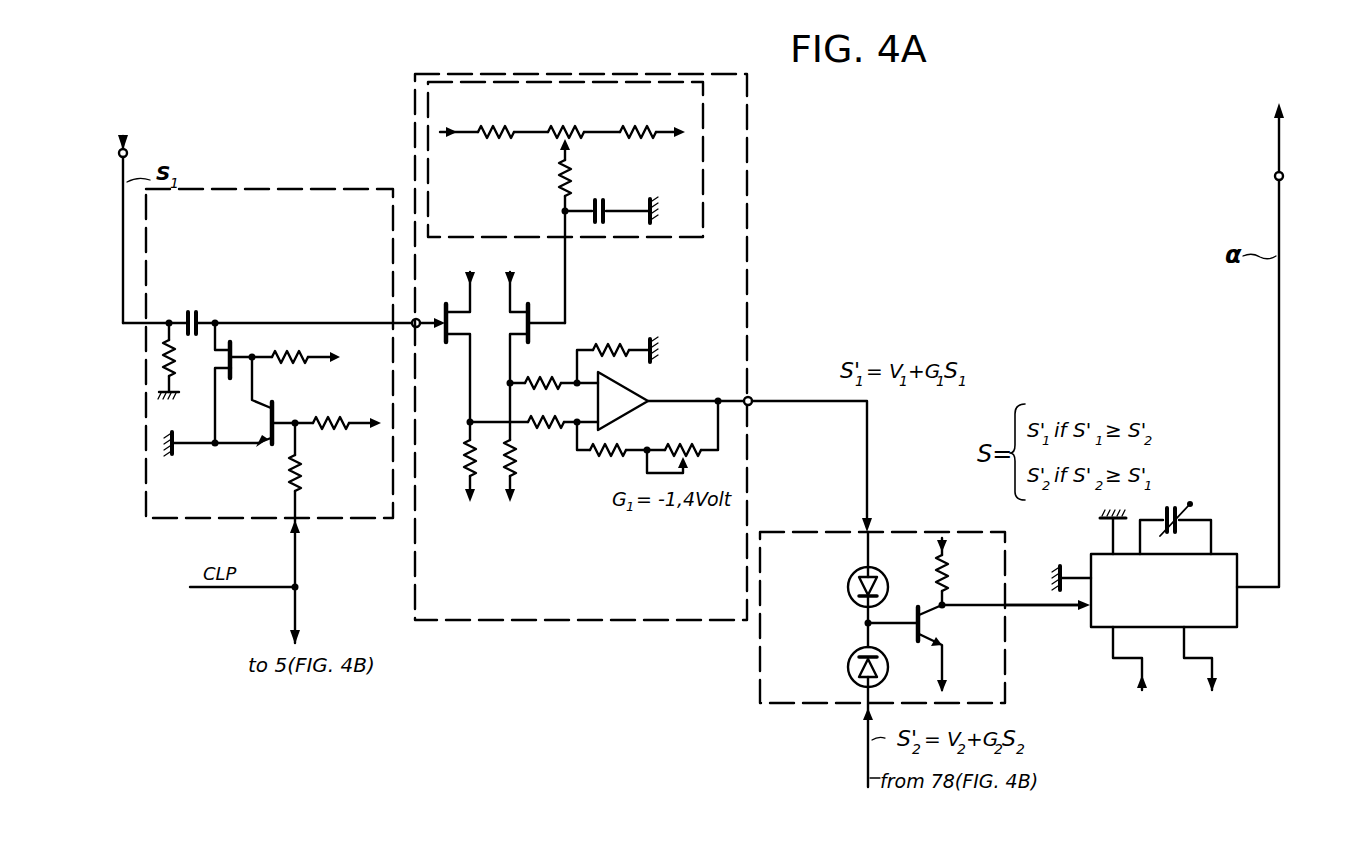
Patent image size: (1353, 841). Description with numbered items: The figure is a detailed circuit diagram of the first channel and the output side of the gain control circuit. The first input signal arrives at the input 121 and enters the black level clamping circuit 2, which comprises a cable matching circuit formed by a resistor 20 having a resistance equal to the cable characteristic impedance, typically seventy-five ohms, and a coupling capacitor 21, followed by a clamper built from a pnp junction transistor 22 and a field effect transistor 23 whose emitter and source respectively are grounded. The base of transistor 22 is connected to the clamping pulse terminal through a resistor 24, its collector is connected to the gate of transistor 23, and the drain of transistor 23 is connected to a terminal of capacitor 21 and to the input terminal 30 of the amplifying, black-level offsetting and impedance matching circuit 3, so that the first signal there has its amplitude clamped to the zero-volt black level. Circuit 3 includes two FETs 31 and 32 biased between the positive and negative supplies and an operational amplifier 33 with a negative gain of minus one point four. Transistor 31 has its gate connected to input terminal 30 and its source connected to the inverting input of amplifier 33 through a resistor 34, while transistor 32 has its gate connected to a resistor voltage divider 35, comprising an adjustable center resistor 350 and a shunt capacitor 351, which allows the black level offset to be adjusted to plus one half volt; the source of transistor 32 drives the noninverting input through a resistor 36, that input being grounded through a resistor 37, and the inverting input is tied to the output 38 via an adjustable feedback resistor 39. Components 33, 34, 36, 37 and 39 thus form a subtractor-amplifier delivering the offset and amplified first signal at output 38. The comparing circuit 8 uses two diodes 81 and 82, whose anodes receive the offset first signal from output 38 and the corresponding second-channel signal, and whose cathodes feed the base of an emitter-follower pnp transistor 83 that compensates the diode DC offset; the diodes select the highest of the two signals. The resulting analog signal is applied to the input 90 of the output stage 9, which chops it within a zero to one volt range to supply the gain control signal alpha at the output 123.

The input 121 is at (128, 154).
The black level clamping circuit 2 is at (300, 190).
The coupling capacitor 21 is at (192, 312).
The resistor 20 is at (176, 360).
The field effect transistor 23 is at (233, 350).
The pnp junction transistor 22 is at (266, 424).
The resistor 24 is at (300, 470).
The input terminal 30 is at (418, 330).
The amplifying, black-level offsetting and impedance matching circuit 3 is at (748, 241).
The resistor voltage divider 35 is at (583, 202).
The adjustable center resistor 350 is at (572, 143).
The shunt capacitor 351 is at (608, 200).
The field effect transistor 31 is at (452, 327).
The field effect transistor 32 is at (522, 326).
The resistor 36 is at (543, 377).
The resistor 34 is at (540, 430).
The resistor 37 is at (606, 343).
The operational amplifier 33 is at (638, 398).
The adjustable feedback resistor 39 is at (683, 447).
The output 38 is at (753, 396).
The comparing circuit 8 is at (760, 672).
The diode 81 is at (848, 586).
The diode 82 is at (848, 670).
The pnp junction transistor 83 is at (925, 627).
The input 90 is at (1088, 614).
The output stage 9 is at (1238, 617).
The output 123 is at (1274, 178).